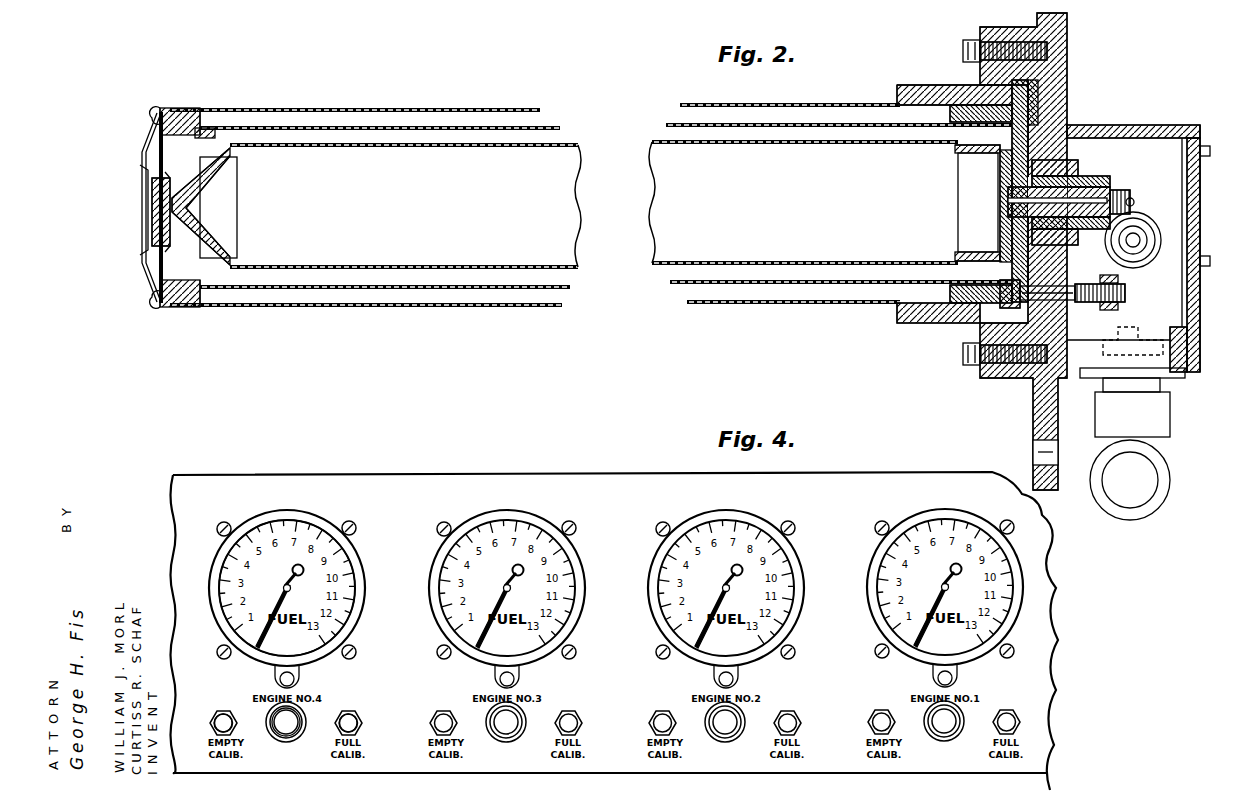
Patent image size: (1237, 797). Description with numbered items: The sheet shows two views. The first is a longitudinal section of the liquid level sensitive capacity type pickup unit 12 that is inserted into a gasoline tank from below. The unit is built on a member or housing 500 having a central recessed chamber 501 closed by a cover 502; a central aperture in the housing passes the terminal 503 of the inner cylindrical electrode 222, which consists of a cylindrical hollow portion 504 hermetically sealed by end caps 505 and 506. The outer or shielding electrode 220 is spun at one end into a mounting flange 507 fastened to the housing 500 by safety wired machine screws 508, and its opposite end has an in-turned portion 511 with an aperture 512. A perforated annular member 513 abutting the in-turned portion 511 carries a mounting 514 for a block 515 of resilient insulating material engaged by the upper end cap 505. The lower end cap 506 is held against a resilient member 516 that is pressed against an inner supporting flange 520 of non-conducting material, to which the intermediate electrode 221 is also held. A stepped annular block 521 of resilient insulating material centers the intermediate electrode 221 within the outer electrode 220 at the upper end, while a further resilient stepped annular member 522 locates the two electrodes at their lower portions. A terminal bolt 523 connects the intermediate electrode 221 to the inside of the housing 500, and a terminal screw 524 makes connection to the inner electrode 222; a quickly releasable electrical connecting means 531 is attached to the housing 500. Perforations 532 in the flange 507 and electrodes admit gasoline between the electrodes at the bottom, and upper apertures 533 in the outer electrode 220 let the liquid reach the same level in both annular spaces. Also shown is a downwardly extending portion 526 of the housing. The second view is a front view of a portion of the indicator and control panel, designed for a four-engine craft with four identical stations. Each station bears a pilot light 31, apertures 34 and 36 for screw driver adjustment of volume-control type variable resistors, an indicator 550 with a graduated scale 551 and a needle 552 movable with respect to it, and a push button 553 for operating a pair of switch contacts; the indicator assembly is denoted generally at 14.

In FIG. 2, the pickup unit 12 is at (870, 314).
In FIG. 4, the indicator gauge assembly 14 is at (382, 666).
In FIG. 4, the pilot light 31 is at (287, 738).
In FIG. 4, the aperture for screw driver adjustment 34 is at (216, 714).
In FIG. 4, the aperture for screw driver adjustment 36 is at (355, 713).
In FIG. 2, the outer or shielding electrode 220 is at (428, 110).
In FIG. 2, the intermediate electrode 221 is at (480, 127).
In FIG. 2, the inner cylindrical electrode 222 is at (580, 134).
In FIG. 2, the member or housing 500 is at (1050, 114).
In FIG. 2, the central recessed chamber 501 is at (1137, 148).
In FIG. 2, the cover 502 is at (1200, 215).
In FIG. 2, the terminal 503 is at (1126, 192).
In FIG. 2, the cylindrical hollow portion 504 is at (394, 266).
In FIG. 2, the end cap 505 is at (240, 184).
In FIG. 2, the end cap 506 is at (960, 162).
In FIG. 2, the mounting flange 507 is at (922, 322).
In FIG. 2, the machine screws 508 is at (967, 42).
In FIG. 2, the in-turned portion 511 is at (150, 140).
In FIG. 2, the aperture 512 is at (146, 236).
In FIG. 2, the perforated annular member 513 is at (158, 160).
In FIG. 2, the mounting 514 is at (160, 212).
In FIG. 2, the block of resilient insulating material 515 is at (155, 258).
In FIG. 2, the resilient member 516 is at (1040, 160).
In FIG. 2, the inner supporting flange 520 is at (1024, 104).
In FIG. 2, the stepped annular block of resilient insulating material 521 is at (163, 108).
In FIG. 2, the resilient stepped annular member 522 is at (1032, 100).
In FIG. 2, the terminal bolt 523 is at (1128, 295).
In FIG. 2, the terminal screw 524 is at (1132, 198).
In FIG. 2, the mounting leg 526 is at (1034, 418).
In FIG. 2, the quickly releasable electrical connecting means 531 is at (1108, 252).
In FIG. 2, the perforations 532 is at (955, 85).
In FIG. 2, the upper apertures 533 is at (205, 128).
In FIG. 4, the indicator 550 is at (319, 509).
In FIG. 4, the graduated scale 551 is at (340, 560).
In FIG. 4, the needle 552 is at (268, 640).
In FIG. 4, the push button 553 is at (300, 678).